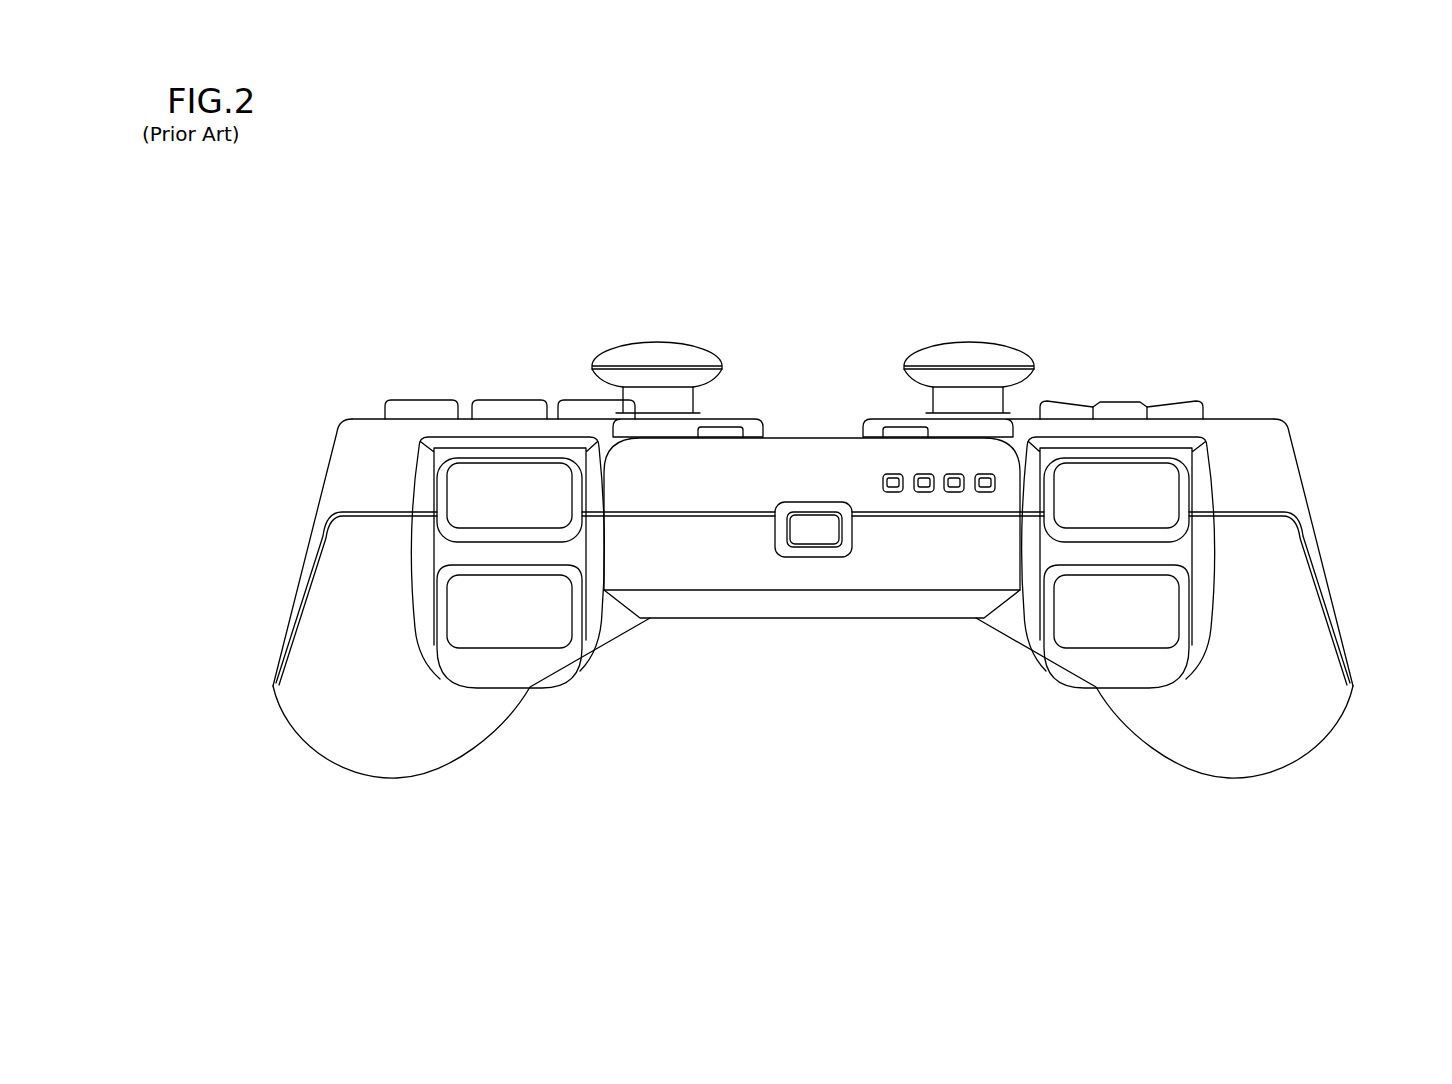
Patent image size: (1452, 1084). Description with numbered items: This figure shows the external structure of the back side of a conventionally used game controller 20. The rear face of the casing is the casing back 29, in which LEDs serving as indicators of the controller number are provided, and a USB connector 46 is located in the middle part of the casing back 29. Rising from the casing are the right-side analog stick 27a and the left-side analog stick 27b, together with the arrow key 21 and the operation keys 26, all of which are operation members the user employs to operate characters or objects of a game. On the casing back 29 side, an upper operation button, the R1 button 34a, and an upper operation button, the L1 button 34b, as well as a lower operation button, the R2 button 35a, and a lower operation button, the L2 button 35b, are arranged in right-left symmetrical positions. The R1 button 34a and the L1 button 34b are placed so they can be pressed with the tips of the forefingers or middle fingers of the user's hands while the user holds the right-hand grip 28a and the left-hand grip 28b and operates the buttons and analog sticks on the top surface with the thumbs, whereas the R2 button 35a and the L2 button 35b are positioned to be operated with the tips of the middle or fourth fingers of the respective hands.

The game controller 20 is at (1268, 194).
The arrow key 21 is at (1124, 388).
The operation keys 26 is at (502, 388).
The right-side analog stick 27a is at (655, 352).
The left-side analog stick 27b is at (978, 352).
The right-hand grip 28a is at (386, 752).
The left-hand grip 28b is at (1228, 752).
The casing back 29 is at (782, 458).
The upper operation button (R1 button) 34a is at (466, 487).
The upper operation button (L1 button) 34b is at (1160, 487).
The lower operation button (R2 button) 35a is at (467, 602).
The lower operation button (L2 button) 35b is at (1159, 602).
The USB connector 46 is at (815, 532).